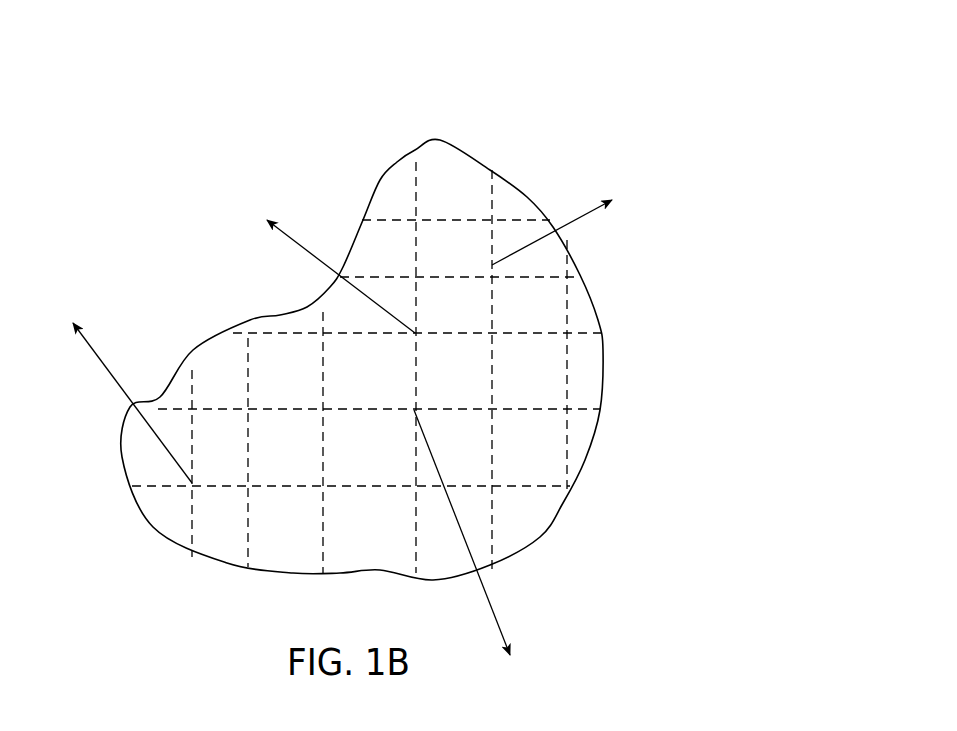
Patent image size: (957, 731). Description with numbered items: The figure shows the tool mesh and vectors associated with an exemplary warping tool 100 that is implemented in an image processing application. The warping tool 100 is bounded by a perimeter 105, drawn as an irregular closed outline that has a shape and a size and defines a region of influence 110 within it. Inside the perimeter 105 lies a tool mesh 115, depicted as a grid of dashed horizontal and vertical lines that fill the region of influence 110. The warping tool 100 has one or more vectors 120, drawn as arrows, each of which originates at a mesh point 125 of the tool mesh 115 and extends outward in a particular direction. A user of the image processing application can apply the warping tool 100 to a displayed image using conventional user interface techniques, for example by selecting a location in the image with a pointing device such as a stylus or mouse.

The warping tool 100 is at (692, 88).
The perimeter 105 is at (585, 352).
The region of influence 110 is at (527, 505).
The tool mesh 115 is at (510, 220).
The vectors 120 is at (299, 245).
The mesh point 125 is at (417, 218).